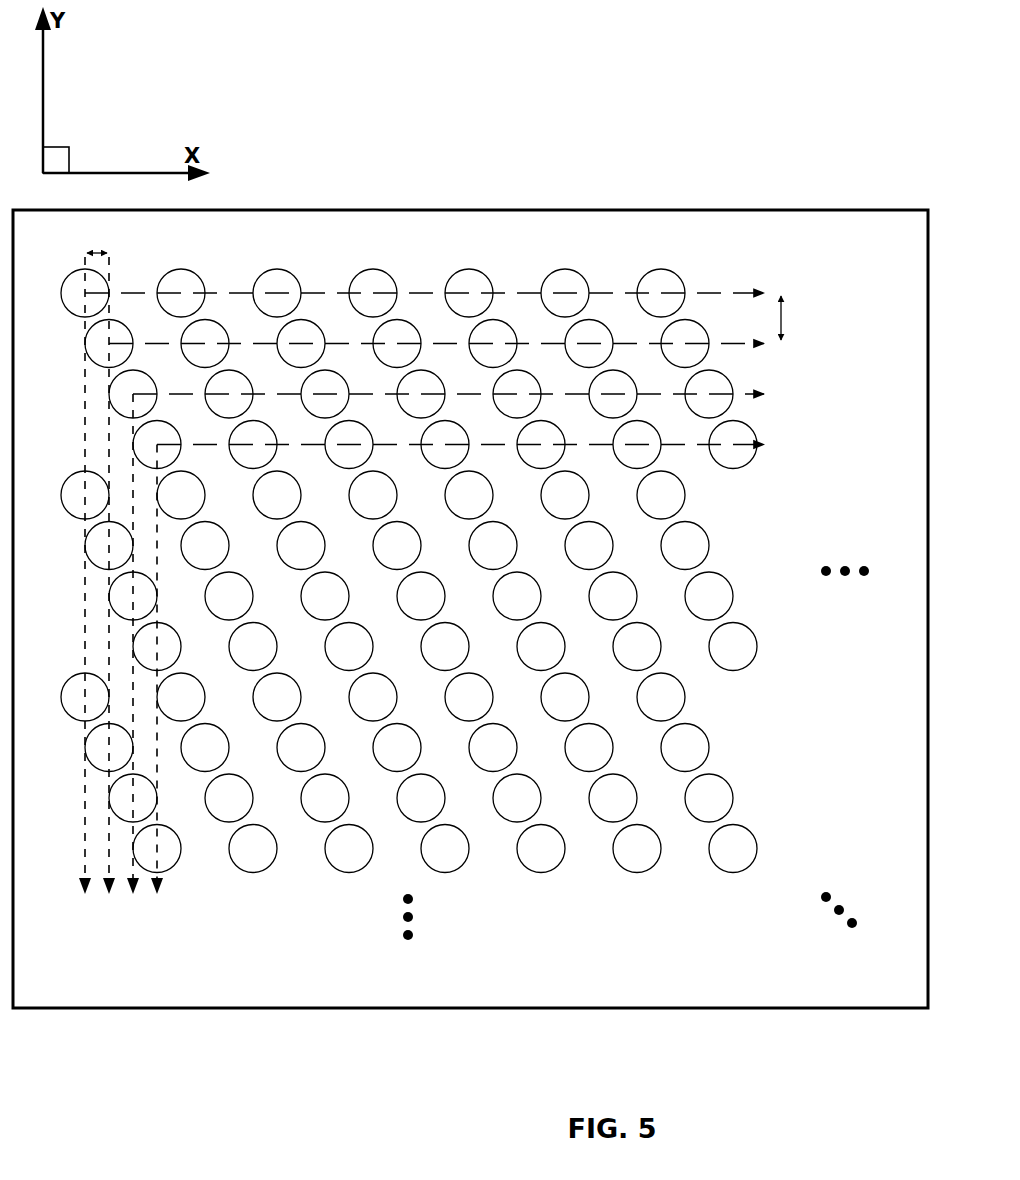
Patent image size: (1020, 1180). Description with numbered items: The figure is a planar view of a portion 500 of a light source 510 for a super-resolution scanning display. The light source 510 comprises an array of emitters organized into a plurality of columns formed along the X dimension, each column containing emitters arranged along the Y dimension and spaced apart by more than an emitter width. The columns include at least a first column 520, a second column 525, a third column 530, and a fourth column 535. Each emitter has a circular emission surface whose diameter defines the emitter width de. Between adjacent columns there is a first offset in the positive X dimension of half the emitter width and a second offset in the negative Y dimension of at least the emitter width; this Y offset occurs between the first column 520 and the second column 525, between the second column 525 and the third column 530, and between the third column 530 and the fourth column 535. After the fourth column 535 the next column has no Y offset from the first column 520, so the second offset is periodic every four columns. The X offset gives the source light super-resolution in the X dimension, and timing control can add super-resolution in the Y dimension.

The portion 500 is at (452, 112).
The light source 510 is at (825, 1000).
The first column 520 is at (85, 897).
The second column 525 is at (109, 897).
The third column 530 is at (133, 897).
The fourth column 535 is at (157, 897).